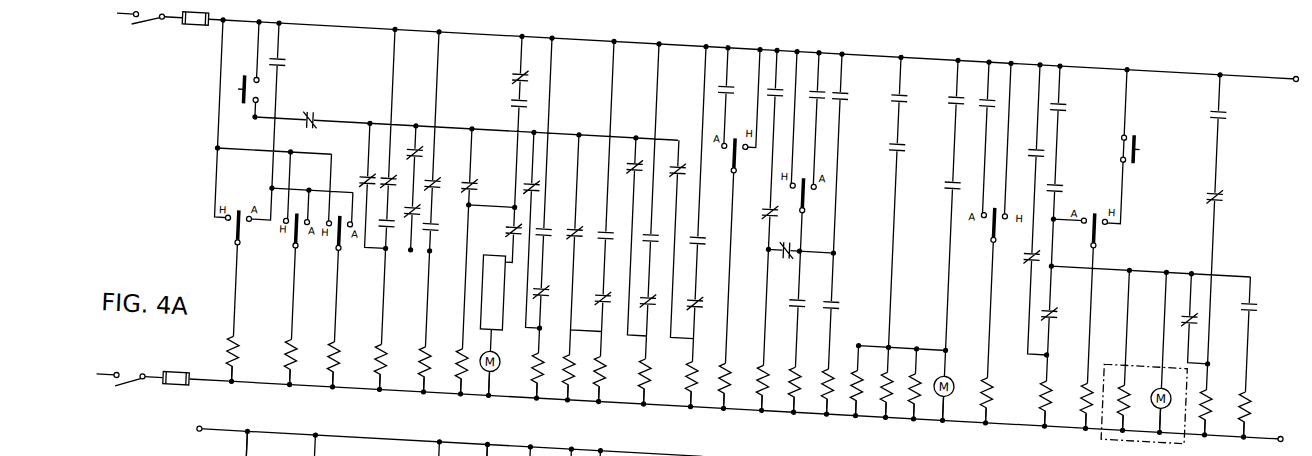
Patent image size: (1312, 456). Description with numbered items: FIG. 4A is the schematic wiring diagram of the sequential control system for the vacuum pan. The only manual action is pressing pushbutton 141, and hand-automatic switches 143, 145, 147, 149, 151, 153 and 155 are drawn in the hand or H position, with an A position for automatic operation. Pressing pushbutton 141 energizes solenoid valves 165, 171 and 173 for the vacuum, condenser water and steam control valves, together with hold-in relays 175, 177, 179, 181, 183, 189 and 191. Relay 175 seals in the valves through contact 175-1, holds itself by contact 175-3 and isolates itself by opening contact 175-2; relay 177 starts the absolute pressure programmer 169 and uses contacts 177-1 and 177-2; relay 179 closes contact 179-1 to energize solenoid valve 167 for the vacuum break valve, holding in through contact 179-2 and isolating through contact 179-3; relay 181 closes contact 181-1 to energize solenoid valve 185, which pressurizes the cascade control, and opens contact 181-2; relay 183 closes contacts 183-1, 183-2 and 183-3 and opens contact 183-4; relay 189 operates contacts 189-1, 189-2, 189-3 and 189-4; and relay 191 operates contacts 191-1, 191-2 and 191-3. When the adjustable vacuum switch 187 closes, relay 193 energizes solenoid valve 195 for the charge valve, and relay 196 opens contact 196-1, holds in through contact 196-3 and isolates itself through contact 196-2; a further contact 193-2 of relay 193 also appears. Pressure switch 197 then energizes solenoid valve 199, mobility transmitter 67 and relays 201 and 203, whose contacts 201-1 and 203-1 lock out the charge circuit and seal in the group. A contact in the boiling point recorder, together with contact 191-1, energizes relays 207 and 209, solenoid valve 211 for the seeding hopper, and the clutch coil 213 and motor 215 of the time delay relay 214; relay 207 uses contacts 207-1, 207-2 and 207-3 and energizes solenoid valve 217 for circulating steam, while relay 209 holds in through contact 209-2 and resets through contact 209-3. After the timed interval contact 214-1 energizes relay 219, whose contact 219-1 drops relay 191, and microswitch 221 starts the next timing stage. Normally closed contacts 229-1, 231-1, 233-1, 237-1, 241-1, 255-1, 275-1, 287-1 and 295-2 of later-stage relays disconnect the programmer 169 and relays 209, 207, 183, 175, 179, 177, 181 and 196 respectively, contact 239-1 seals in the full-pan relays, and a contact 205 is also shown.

The pushbutton 141 is at (244, 76).
The hand-automatic switch 143 is at (236, 229).
The hand-automatic switch 145 is at (298, 226).
The hand-automatic switch 147 is at (344, 233).
The hand-automatic switch 149 is at (744, 128).
The hand-automatic switch 151 is at (814, 162).
The hand-automatic switch 153 is at (980, 230).
The hand-automatic switch 155 is at (1108, 232).
The solenoid valve 165 is at (254, 348).
The solenoid valve 167 is at (743, 350).
The absolute pressure programmer 169 is at (514, 348).
The solenoid valve 171 is at (308, 350).
The solenoid valve 173 is at (352, 352).
The hold-in relay 175 is at (432, 344).
The hold-in relay 177 is at (470, 345).
The hold-in relay 179 is at (663, 350).
The hold-in relay 181 is at (586, 350).
The hold-in relay 183 is at (398, 352).
The solenoid valve 185 is at (618, 350).
The hold-in relay 189 is at (709, 350).
The hold-in relay 191 is at (555, 350).
The relay 193 is at (812, 350).
The solenoid valve 195 is at (840, 346).
The relay 196 is at (774, 345).
The solenoid valve 199 is at (874, 350).
The relay 201 is at (904, 352).
The relay 203 is at (923, 397).
The mobility transmitter 67 is at (952, 400).
The solenoid valve 217 is at (999, 401).
The relay 207 is at (1056, 405).
The solenoid valve 211 is at (1096, 344).
The clutch coil 213 is at (1132, 409).
The motor 215 is at (1147, 401).
The relay 209 is at (1215, 413).
The relay 219 is at (1257, 416).
The time delay relay 214 is at (1196, 390).
The microswitch 221 is at (273, 443).
The contact of relay 239 239-1 is at (502, 450).
The contact of relay 175 175-1 is at (289, 61).
The contact of relay 175 175-2 is at (412, 136).
The contact of relay 175 175-3 is at (443, 221).
The contact of relay 196 196-1 is at (320, 109).
The contact of relay 196 196-2 is at (791, 228).
The contact of relay 196 196-3 is at (791, 111).
The contact of relay 275 275-1 is at (515, 58).
The contact of relay 177 177-1 is at (511, 86).
The contact of relay 177 177-2 is at (482, 170).
The contact of relay 183 183-1 is at (876, 158).
The contact of relay 183 183-2 is at (927, 198).
The contact of relay 183 183-3 is at (384, 224).
The contact of relay 183 183-4 is at (365, 167).
The contact of relay 241 241-1 is at (445, 169).
The contact of relay 191 191-1 is at (1068, 60).
The contact of relay 191 191-2 is at (552, 212).
The contact of relay 191 191-3 is at (535, 170).
The contact of relay 229 229-1 is at (517, 216).
The contact of relay 181 181-1 is at (610, 219).
The contact of relay 181 181-2 is at (584, 211).
The contact of relay 179 179-1 is at (736, 60).
The contact of relay 179 179-2 is at (664, 209).
The contact of relay 179 179-3 is at (634, 141).
The contact of relay 189 189-1 is at (810, 320).
The contact of relay 189 189-2 is at (852, 319).
The contact of relay 189 189-3 is at (708, 218).
The contact of relay 189 189-4 is at (686, 139).
The contact of relay 237 237-1 is at (417, 210).
The contact of relay 219 219-1 is at (557, 276).
The contact of relay 287 287-1 is at (620, 283).
The contact of relay 255 255-1 is at (665, 282).
The contact of relay 201 201-1 is at (710, 279).
The adjustable vacuum switch 187 is at (823, 58).
The relay contact 193-2 is at (859, 109).
The pressure switch 197 is at (909, 110).
The contact of relay 203 203-1 is at (950, 59).
The contact of relay 207 207-1 is at (1048, 106).
The contact of relay 207 207-2 is at (954, 122).
The contact of relay 207 207-3 is at (1062, 326).
The relay contact 205 is at (1068, 142).
The contact of relay 295 295-2 is at (774, 186).
The contact of relay 233 233-1 is at (1014, 269).
The contact of relay 209 209-2 is at (1243, 127).
The contact of relay 209 209-3 is at (1161, 323).
The contact of relay 231 231-1 is at (1234, 206).
The contact of time delay relay 214 214-1 is at (1260, 244).